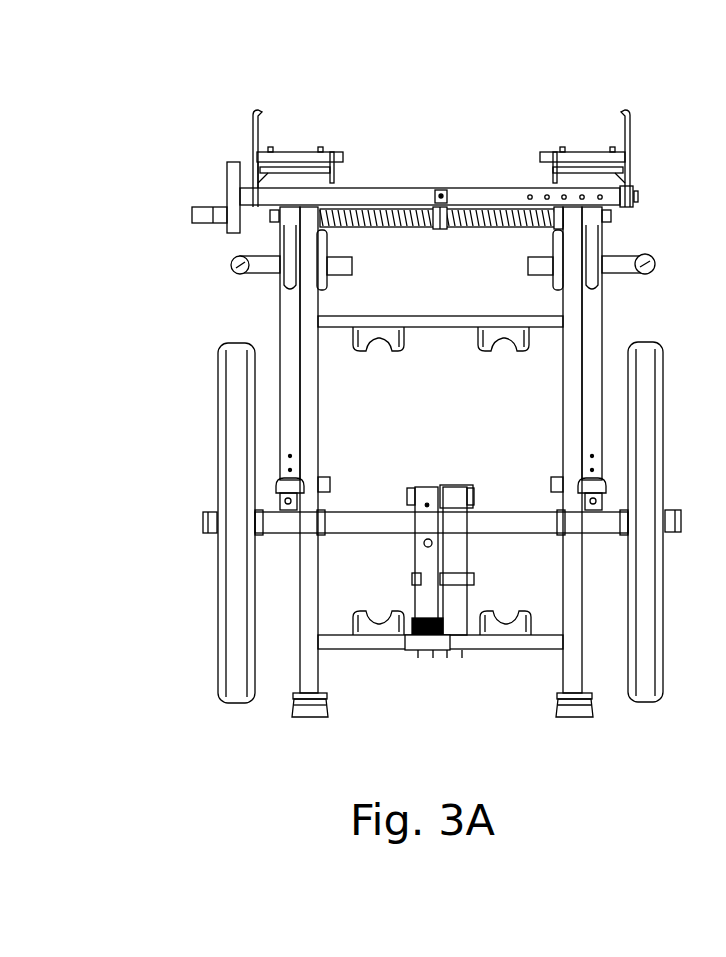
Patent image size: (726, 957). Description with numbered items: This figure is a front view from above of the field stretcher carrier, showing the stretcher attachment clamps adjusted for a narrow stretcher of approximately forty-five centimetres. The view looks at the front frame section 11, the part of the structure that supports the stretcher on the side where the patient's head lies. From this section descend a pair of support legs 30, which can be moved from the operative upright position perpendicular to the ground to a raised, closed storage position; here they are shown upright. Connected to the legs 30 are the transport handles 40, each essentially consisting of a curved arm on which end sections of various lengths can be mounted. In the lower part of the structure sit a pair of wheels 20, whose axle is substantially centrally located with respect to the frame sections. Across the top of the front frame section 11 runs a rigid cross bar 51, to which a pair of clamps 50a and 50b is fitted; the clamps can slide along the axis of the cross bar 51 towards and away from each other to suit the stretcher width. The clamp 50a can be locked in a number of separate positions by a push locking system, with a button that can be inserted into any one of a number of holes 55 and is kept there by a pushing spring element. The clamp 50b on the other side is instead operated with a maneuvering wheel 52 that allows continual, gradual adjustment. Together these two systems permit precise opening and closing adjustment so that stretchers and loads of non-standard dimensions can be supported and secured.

The front frame section 11 is at (282, 330).
The wheels 20 is at (235, 620).
The support legs 30 is at (572, 430).
The transport handles 40 is at (231, 268).
The clamps 50a is at (570, 136).
The clamps 50b is at (318, 136).
The cross bar 51 is at (396, 195).
The maneuvering wheel 52 is at (212, 190).
The holes 55 is at (599, 195).